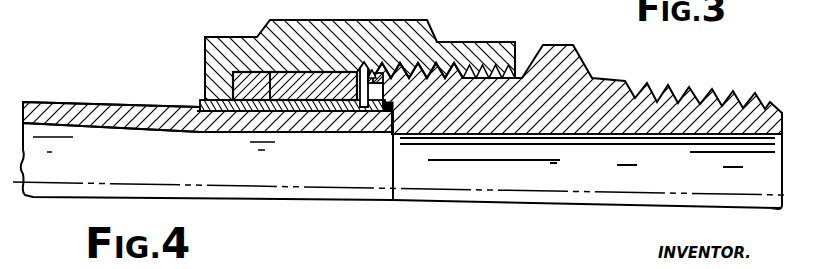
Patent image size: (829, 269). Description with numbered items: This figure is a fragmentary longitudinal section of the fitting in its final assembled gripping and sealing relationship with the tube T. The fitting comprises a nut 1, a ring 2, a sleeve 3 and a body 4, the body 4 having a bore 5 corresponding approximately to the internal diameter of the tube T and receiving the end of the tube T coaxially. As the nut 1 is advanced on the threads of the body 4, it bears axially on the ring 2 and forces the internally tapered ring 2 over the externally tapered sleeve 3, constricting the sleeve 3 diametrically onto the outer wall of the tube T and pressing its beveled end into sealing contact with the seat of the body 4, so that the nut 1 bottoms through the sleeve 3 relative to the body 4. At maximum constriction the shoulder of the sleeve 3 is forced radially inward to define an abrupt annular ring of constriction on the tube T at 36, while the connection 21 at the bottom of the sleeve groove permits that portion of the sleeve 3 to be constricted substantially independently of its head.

The tube T is at (71, 101).
The nut 1 is at (235, 37).
The ring 2 is at (272, 72).
The sleeve 3 is at (337, 73).
The body 4 is at (588, 67).
The bore 5 is at (660, 136).
The connection 21 is at (353, 113).
The annular ring of constriction 36 is at (307, 113).